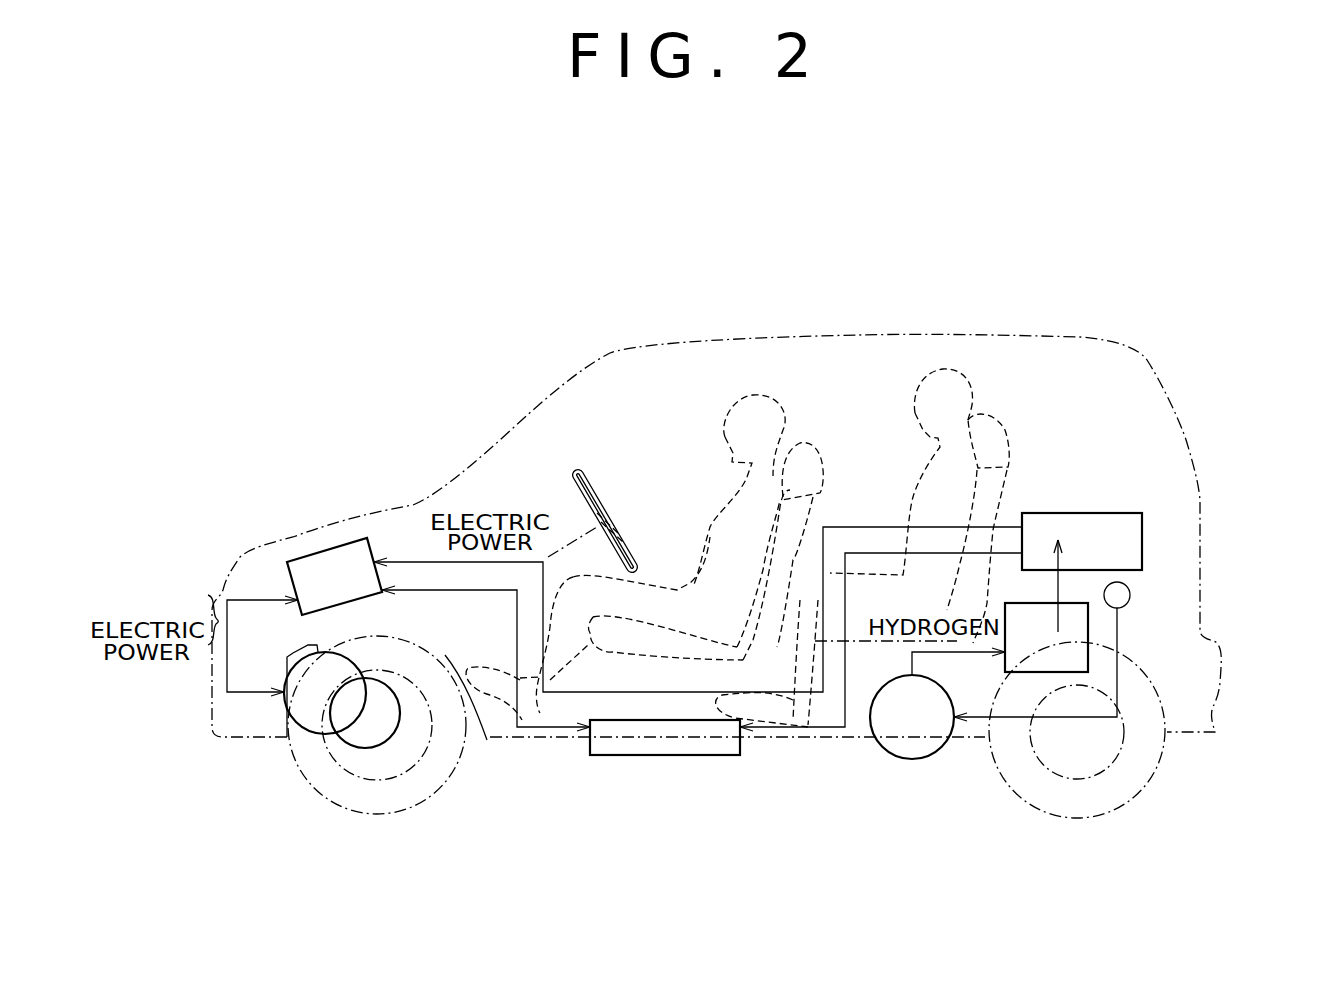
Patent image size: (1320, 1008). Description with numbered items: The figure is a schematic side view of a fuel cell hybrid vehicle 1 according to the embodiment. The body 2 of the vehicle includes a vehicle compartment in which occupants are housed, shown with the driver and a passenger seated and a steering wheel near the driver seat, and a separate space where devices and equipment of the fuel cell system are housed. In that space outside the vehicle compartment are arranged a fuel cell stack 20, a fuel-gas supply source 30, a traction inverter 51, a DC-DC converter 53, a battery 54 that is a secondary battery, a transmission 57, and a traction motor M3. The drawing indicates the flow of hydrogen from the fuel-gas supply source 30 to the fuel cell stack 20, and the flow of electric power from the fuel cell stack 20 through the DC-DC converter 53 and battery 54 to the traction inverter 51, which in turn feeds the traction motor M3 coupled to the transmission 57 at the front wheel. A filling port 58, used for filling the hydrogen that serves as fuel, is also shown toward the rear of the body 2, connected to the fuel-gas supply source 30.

The fuel cell hybrid vehicle 1 is at (325, 270).
The body 2 is at (884, 334).
The traction inverter 51 is at (320, 562).
The traction motor M3 is at (320, 717).
The transmission 57 is at (383, 727).
The battery 54 is at (698, 750).
The DC-DC converter 53 is at (1127, 538).
The fuel cell stack 20 is at (1032, 638).
The fuel-gas supply source 30 is at (917, 747).
The filling port 58 is at (1131, 595).